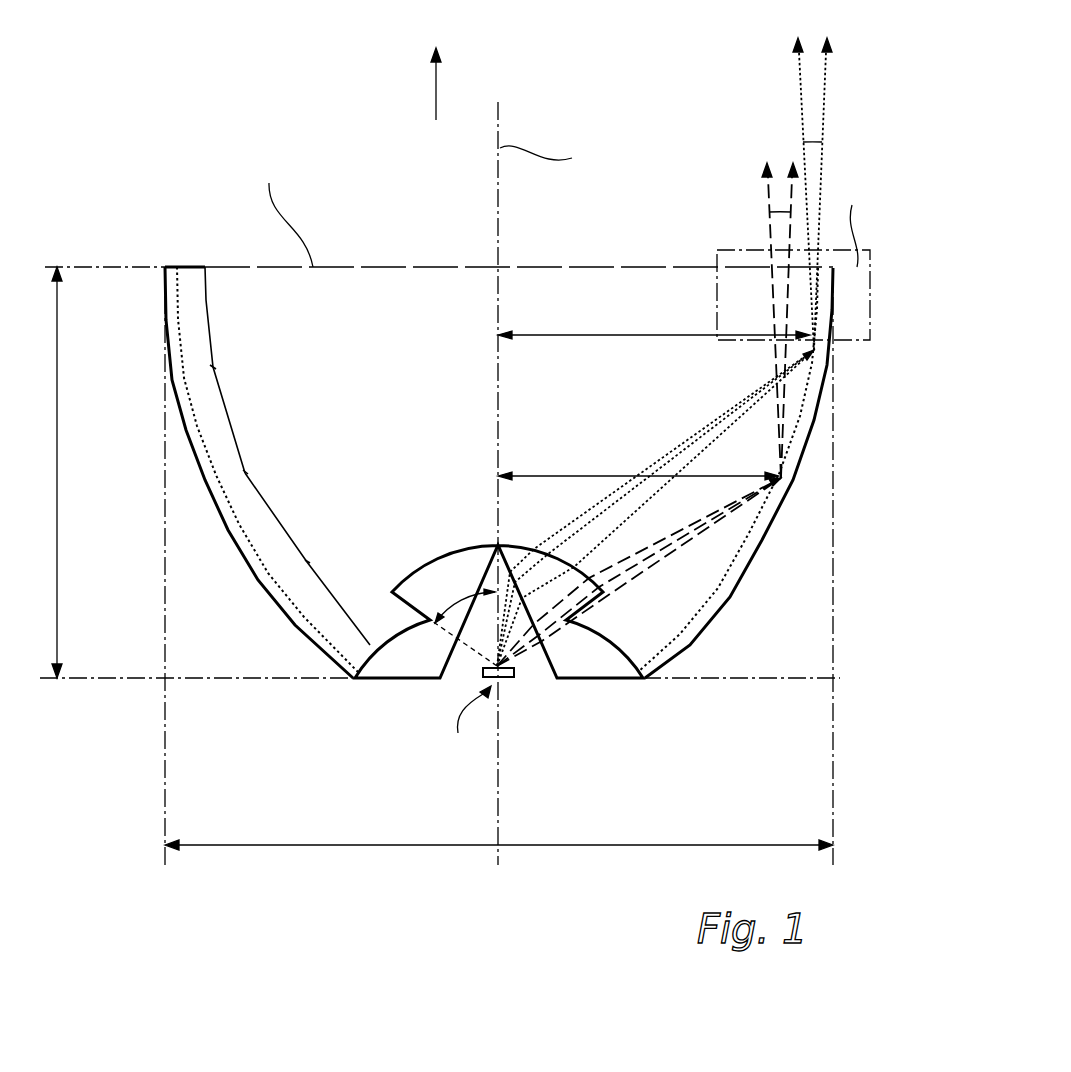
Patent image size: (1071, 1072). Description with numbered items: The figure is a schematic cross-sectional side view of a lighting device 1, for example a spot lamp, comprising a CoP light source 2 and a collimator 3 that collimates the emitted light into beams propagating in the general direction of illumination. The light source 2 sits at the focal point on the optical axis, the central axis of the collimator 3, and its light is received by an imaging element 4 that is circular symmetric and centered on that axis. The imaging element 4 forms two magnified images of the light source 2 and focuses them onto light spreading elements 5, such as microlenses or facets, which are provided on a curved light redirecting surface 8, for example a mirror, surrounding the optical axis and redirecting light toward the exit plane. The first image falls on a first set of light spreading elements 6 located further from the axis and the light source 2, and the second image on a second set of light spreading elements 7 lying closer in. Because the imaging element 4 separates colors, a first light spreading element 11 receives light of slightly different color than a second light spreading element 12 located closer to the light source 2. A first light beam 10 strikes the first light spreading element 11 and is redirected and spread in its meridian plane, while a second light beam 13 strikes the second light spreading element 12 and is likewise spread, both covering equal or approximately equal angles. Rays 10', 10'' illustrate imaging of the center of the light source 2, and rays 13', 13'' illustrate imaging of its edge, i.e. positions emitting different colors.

The lighting device 1 is at (91, 163).
The CoP light source 2 is at (503, 681).
The collimator 3 is at (746, 640).
The imaging element 4 is at (462, 547).
The light spreading elements 5 is at (697, 576).
The first set of light spreading elements 6 is at (226, 370).
The second set of light spreading elements 7 is at (307, 559).
The light redirecting surface 8 is at (207, 490).
The first light beam 10 is at (655, 508).
The ray 10' is at (655, 508).
The ray 10'' is at (655, 508).
The first light spreading element 11 is at (826, 398).
The second light spreading element 12 is at (782, 478).
The second light beam 13 is at (639, 546).
The ray 13' is at (693, 572).
The ray 13'' is at (656, 572).